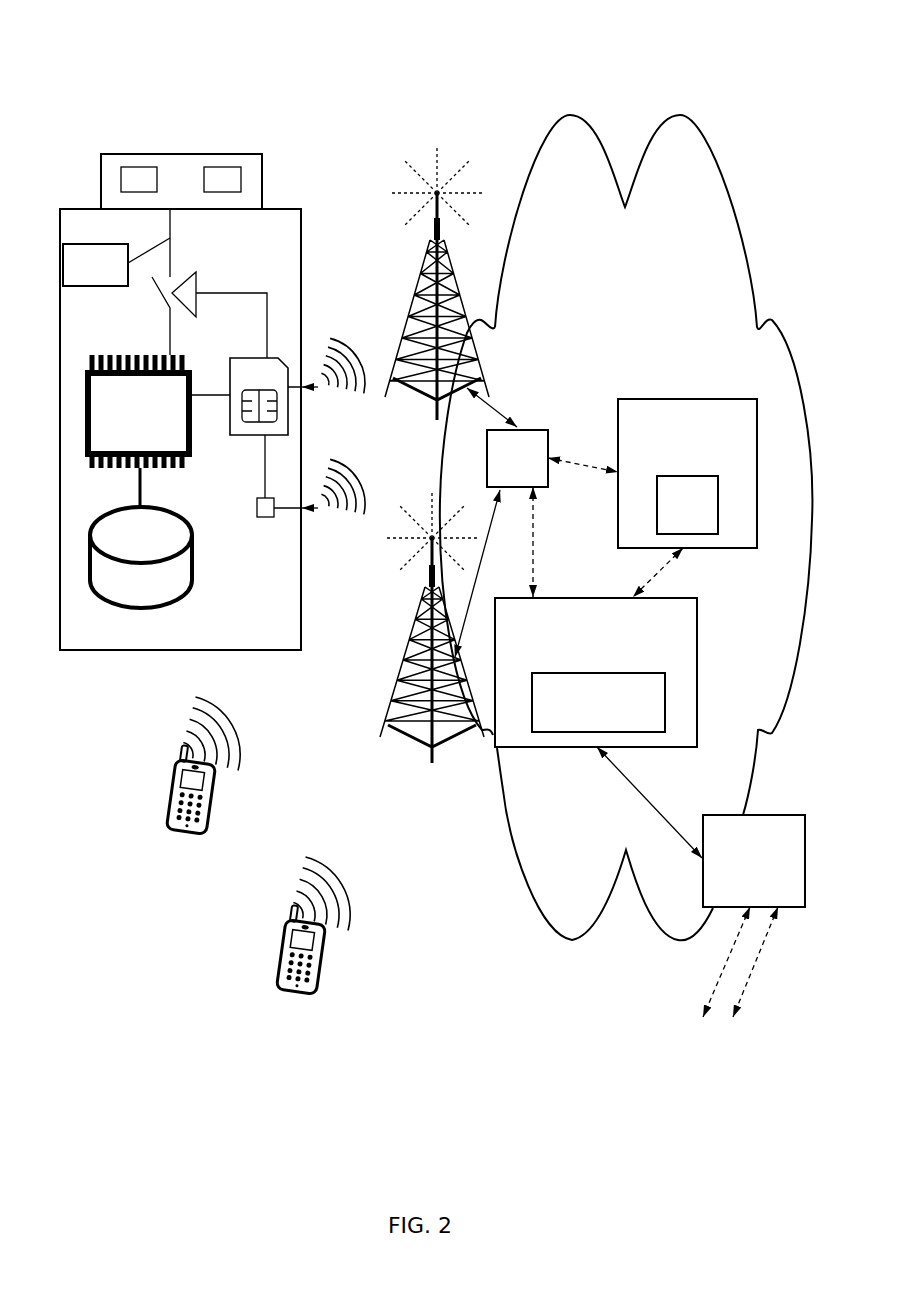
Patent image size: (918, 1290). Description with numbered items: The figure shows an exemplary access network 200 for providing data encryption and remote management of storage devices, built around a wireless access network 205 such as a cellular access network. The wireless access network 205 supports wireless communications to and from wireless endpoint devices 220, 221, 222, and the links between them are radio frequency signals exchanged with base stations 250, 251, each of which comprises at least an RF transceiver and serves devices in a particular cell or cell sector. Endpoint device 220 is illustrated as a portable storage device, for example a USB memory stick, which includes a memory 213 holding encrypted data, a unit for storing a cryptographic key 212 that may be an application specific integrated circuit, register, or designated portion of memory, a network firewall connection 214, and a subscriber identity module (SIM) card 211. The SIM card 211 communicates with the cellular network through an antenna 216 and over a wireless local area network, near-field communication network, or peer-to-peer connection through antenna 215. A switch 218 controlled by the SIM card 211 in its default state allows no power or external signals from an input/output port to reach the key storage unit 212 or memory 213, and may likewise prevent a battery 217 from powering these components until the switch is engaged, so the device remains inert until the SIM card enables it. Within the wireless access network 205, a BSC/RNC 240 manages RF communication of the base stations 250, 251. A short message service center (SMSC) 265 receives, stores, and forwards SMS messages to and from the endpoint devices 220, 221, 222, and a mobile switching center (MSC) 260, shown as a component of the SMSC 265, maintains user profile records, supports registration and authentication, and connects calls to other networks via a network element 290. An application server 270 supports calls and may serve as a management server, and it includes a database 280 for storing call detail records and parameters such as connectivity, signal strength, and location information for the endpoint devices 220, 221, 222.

The access network 200 is at (85, 36).
The wireless access network 205 is at (643, 359).
The subscriber identity module (SIM) card 211 is at (267, 358).
The unit for storing a cryptographic key 212 is at (85, 442).
The memory 213 is at (90, 543).
The network firewall connection 214 is at (263, 517).
The antenna 215 is at (310, 516).
The antenna 216 is at (310, 395).
The battery 217 is at (113, 276).
The switch 218 is at (171, 280).
The wireless endpoint device 220 is at (205, 646).
The wireless endpoint device 221 is at (213, 787).
The wireless endpoint device 222 is at (323, 948).
The BSC/RNC 240 is at (535, 482).
The base station 250 is at (425, 398).
The base station 251 is at (385, 712).
The mobile switching center (MSC) 260 is at (617, 727).
The short message service center (SMSC) 265 is at (612, 661).
The application server 270 is at (705, 461).
The database 280 is at (705, 529).
The network element 290 is at (770, 886).